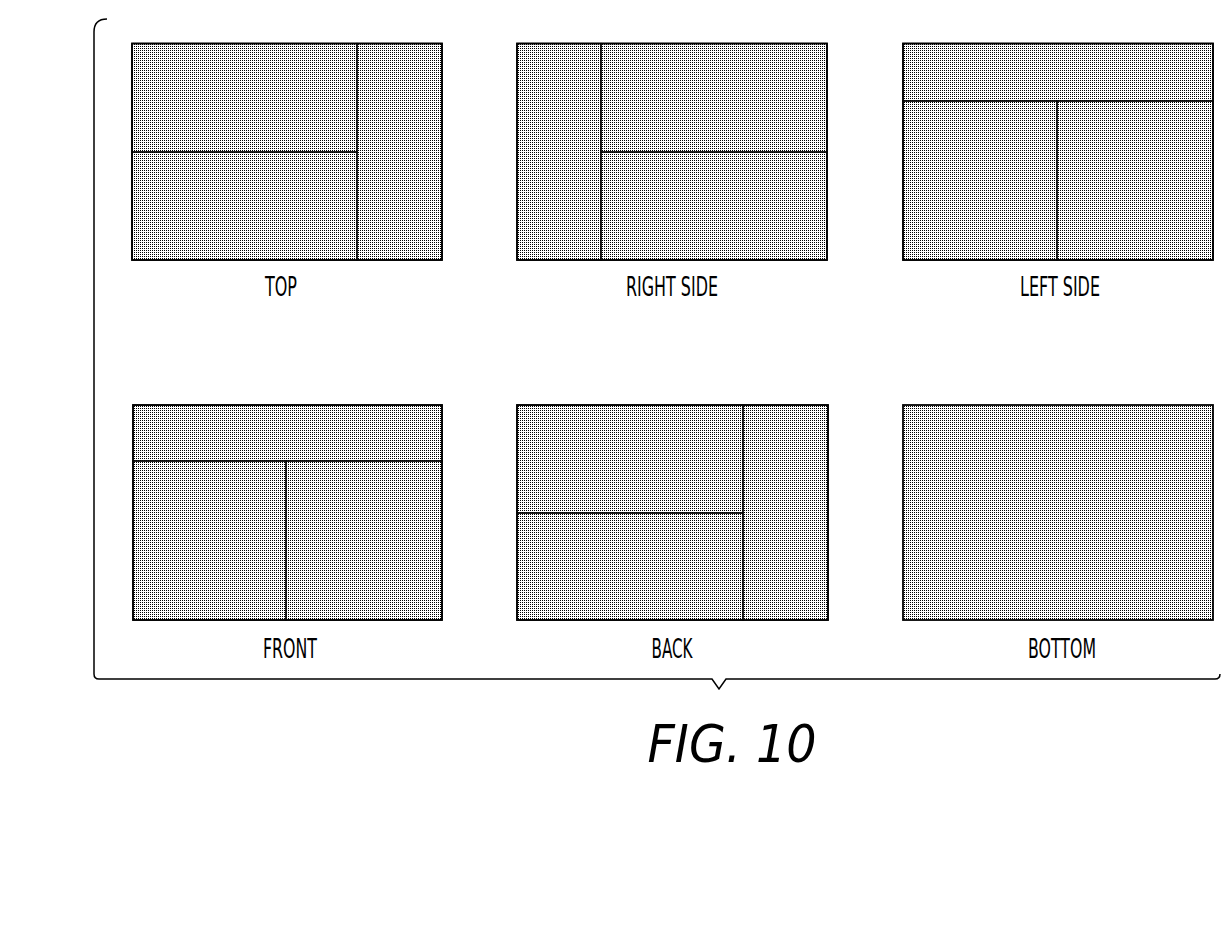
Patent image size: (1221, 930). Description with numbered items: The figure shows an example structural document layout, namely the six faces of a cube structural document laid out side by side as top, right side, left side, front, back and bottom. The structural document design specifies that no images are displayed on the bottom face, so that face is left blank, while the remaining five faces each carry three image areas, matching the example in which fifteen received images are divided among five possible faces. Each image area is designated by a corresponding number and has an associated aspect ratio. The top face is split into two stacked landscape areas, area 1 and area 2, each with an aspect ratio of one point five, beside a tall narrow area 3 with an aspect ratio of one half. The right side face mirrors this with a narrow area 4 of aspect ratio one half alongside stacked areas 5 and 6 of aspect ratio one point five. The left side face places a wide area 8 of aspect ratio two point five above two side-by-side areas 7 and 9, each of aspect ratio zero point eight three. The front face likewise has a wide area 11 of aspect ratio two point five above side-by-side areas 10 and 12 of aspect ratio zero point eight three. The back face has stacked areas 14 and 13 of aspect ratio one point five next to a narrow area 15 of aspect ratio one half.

The area 1 is at (244, 98).
The area 2 is at (244, 206).
The area 3 is at (399, 152).
The area 4 is at (559, 152).
The area 5 is at (714, 98).
The area 6 is at (714, 206).
The area 7 is at (980, 180).
The area 8 is at (1058, 73).
The area 9 is at (1135, 180).
The area 10 is at (209, 540).
The area 11 is at (287, 433).
The area 12 is at (364, 540).
The area 13 is at (630, 566).
The area 14 is at (630, 459).
The area 15 is at (785, 512).